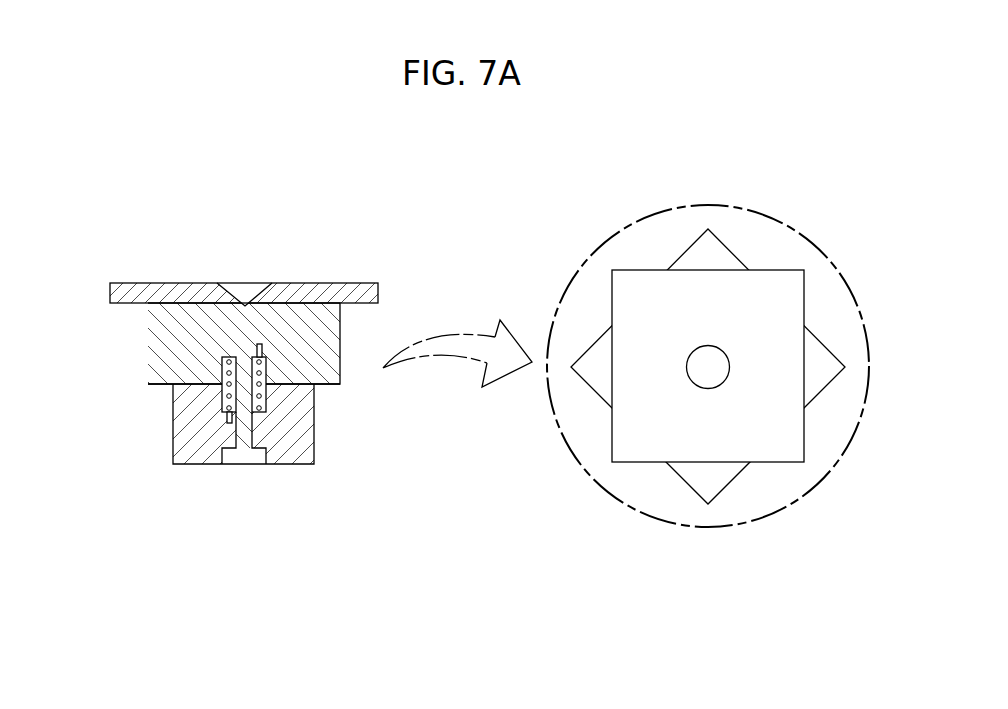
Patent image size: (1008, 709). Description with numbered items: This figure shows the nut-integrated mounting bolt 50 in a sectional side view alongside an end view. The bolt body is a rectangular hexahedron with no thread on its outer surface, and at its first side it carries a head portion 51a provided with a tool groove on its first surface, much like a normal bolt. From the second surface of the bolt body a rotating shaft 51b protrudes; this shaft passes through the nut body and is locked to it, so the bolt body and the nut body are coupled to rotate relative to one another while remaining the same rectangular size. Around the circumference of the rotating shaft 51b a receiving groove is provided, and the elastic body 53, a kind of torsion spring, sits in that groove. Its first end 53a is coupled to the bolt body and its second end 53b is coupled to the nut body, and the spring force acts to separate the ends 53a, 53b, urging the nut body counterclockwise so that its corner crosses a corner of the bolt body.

The nut-integrated mounting bolt 50 is at (103, 201).
The head portion 51a is at (165, 288).
The rotating shaft 51b is at (245, 427).
The elastic body 53 is at (262, 397).
The first end 53a is at (262, 346).
The second end 53b is at (228, 418).